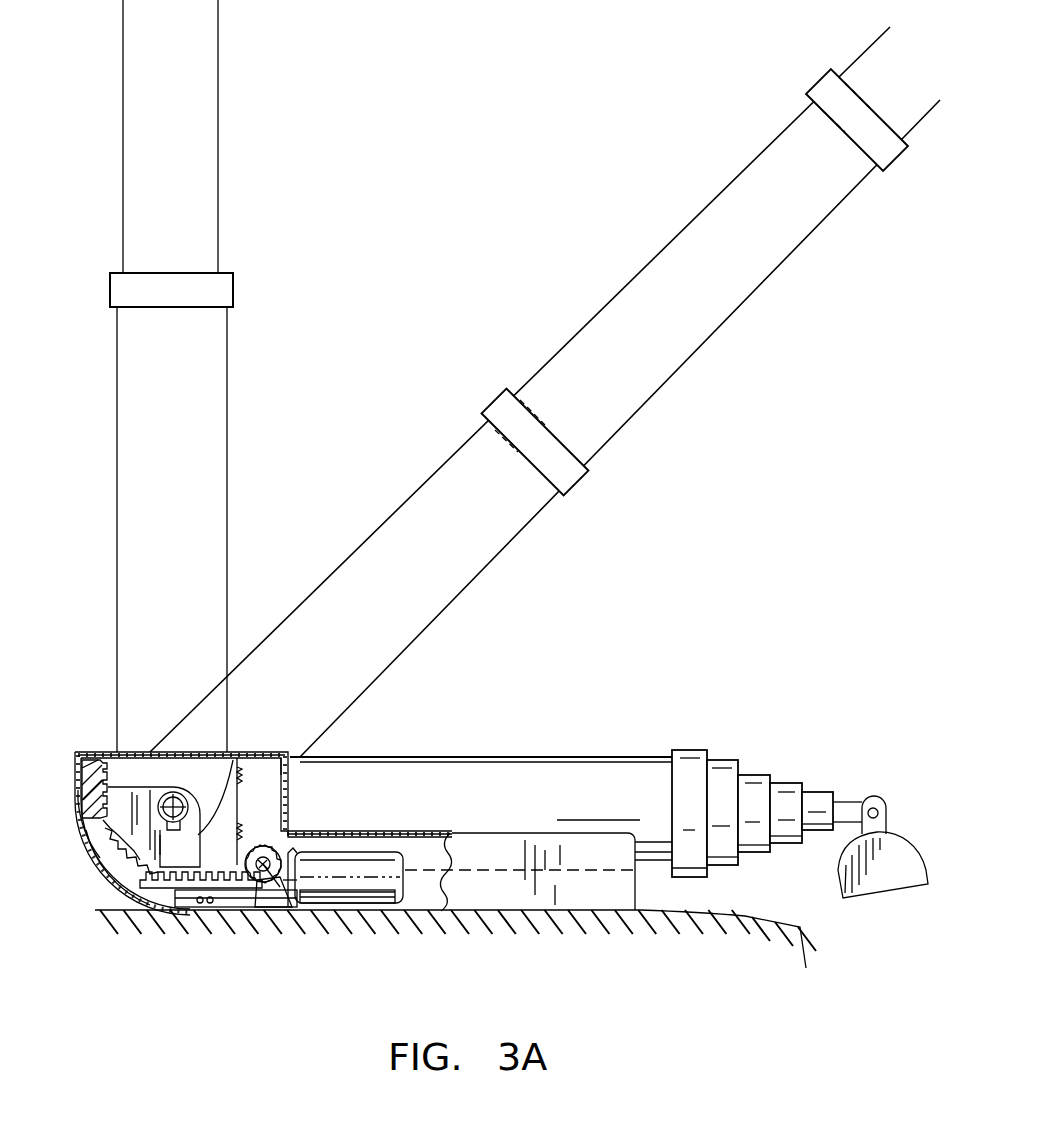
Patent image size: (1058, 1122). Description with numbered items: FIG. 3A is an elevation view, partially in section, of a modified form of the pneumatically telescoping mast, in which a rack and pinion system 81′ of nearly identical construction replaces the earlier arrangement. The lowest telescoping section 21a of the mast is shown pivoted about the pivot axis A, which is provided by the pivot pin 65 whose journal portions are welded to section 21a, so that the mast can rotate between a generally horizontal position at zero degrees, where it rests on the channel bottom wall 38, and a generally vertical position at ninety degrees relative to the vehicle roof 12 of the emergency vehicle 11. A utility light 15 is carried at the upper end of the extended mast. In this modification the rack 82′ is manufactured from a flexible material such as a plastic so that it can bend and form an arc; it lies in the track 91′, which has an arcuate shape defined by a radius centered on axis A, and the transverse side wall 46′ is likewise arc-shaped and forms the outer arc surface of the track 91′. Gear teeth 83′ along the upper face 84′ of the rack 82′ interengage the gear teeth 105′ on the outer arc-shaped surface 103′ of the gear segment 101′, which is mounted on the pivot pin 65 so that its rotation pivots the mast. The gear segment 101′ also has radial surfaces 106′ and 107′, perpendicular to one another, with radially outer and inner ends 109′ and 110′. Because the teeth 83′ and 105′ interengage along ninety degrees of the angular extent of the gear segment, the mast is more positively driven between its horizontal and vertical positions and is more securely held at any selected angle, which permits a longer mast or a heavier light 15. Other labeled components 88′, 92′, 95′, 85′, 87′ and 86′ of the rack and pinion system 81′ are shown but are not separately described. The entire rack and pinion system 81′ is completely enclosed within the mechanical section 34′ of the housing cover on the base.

The telescoping mast section 21a is at (690, 703).
The utility light 15 is at (898, 845).
The vehicle roof 12 is at (748, 917).
The emergency vehicle 11 is at (812, 944).
The rack and pinion system 81′ is at (272, 825).
The radial surface 107′ is at (288, 755).
The housing bottom wall 88′ is at (338, 830).
The rack 82′ is at (97, 748).
The outer arc-shaped surface 103′ is at (137, 1058).
The radially outer end 109′ is at (263, 1032).
The radial surface 106′ is at (174, 787).
The radially inner end 110′ is at (174, 785).
The pivot pin 65 is at (188, 784).
The pivot axis A is at (160, 821).
The transverse side wall 46′ is at (97, 851).
The upper face 84′ is at (143, 870).
The gear teeth 95′ is at (138, 860).
The gear teeth 105′ is at (122, 862).
The gear teeth 83′ is at (186, 880).
The gear segment 101′ is at (190, 918).
The base 92′ is at (188, 906).
The track 91′ is at (244, 906).
The pinion shaft 85′ is at (258, 905).
The support 87′ is at (288, 908).
The mechanical section 34′ is at (330, 832).
The motor mount 86′ is at (398, 902).
The channel bottom wall 38 is at (590, 870).